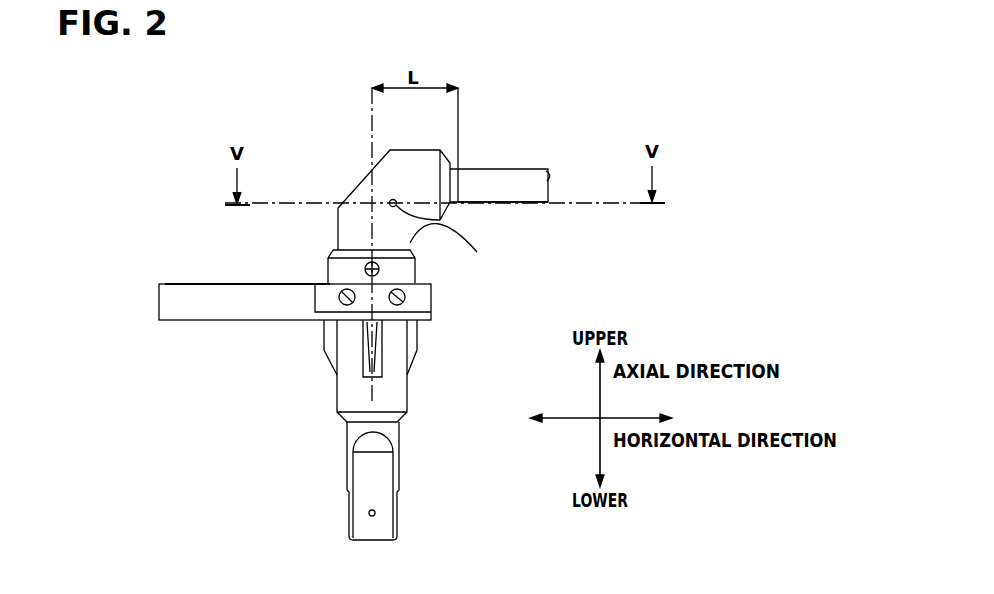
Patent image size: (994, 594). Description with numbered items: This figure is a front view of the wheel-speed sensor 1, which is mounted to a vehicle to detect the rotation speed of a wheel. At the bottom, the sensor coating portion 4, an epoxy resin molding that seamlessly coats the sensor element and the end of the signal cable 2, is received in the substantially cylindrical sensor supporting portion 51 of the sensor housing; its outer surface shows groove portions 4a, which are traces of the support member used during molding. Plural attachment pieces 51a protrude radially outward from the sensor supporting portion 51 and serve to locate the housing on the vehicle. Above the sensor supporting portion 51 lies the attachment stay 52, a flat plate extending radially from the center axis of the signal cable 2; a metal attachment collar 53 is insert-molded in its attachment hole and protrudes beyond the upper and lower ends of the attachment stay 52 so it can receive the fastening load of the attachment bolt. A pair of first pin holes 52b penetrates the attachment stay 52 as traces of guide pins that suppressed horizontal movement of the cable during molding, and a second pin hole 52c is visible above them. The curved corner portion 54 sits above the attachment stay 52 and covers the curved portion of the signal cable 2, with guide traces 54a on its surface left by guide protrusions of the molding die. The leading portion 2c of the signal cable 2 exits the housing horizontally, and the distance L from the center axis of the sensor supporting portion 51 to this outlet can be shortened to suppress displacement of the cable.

The wheel-speed sensor 1 is at (187, 153).
The signal cable 2 is at (537, 170).
The leading portion 2c is at (480, 190).
The sensor coating portion 4 is at (392, 443).
The groove portions 4a is at (348, 515).
The sensor supporting portion 51 is at (397, 400).
The attachment pieces 51a is at (327, 347).
The attachment stay 52 is at (175, 305).
The first pin holes 52b is at (340, 292).
The second pin holes 52c is at (365, 268).
The attachment collar 53 is at (200, 282).
The corner portion 54 is at (366, 188).
The guide traces 54a is at (446, 241).